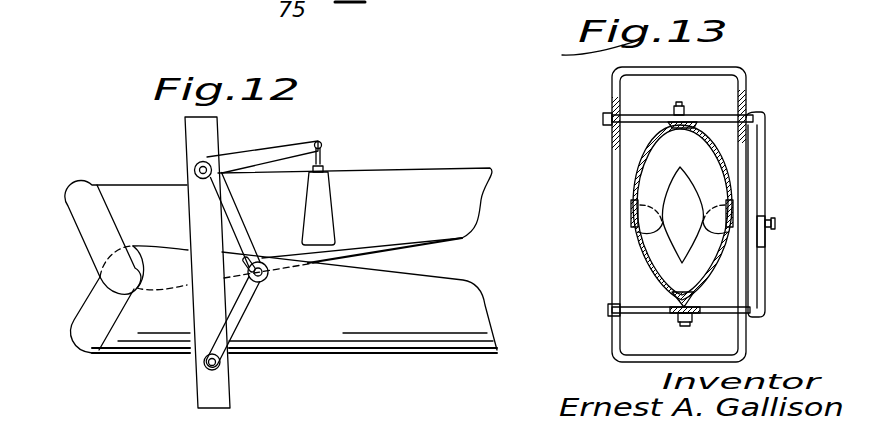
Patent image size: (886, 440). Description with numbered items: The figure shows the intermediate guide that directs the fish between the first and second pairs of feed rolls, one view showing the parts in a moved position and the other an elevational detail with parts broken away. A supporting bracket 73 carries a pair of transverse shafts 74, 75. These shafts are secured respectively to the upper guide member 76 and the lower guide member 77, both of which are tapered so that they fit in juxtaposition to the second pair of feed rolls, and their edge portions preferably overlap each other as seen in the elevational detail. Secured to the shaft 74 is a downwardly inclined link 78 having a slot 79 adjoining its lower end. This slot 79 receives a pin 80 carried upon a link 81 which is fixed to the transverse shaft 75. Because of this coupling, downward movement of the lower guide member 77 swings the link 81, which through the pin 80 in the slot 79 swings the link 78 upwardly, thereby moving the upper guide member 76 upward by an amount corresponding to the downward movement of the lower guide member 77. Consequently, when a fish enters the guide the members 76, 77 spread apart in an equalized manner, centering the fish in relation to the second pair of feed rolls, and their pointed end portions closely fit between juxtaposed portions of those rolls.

In FIG. 13, the supporting bracket 73 is at (746, 82).
In FIG. 13, the transverse shaft 74 is at (703, 118).
In FIG. 12, the transverse shaft 75 is at (188, 137).
In FIG. 13, the transverse shaft 75 is at (723, 312).
In FIG. 12, the upper guide member 76 is at (398, 188).
In FIG. 13, the upper guide member 76 is at (645, 169).
In FIG. 12, the lower guide member 77 is at (437, 337).
In FIG. 13, the lower guide member 77 is at (640, 263).
In FIG. 12, the downwardly inclined link 78 is at (227, 217).
In FIG. 13, the downwardly inclined link 78 is at (765, 173).
In FIG. 12, the slot 79 is at (267, 260).
In FIG. 12, the pin 80 is at (252, 283).
In FIG. 13, the pin 80 is at (776, 222).
In FIG. 12, the link 81 is at (227, 330).
In FIG. 13, the link 81 is at (764, 267).